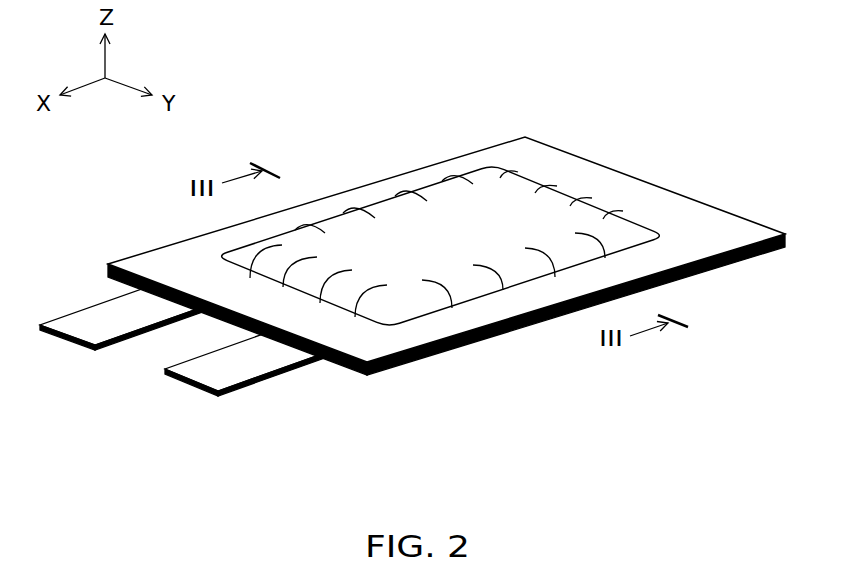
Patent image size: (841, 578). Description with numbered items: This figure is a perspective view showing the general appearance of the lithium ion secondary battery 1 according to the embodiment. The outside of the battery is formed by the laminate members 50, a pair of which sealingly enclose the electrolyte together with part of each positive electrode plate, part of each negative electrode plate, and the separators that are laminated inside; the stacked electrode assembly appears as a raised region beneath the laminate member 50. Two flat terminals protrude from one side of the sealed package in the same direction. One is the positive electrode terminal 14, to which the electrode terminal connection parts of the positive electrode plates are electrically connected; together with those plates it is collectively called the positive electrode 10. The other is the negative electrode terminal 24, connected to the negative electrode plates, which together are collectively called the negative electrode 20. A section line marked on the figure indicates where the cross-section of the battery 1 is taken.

The lithium ion secondary battery 1 is at (403, 271).
The laminate member 50 is at (728, 212).
The negative electrode terminal 24 is at (80, 308).
The negative electrode 20 is at (143, 296).
The positive electrode terminal 14 is at (258, 385).
The positive electrode 10 is at (271, 387).